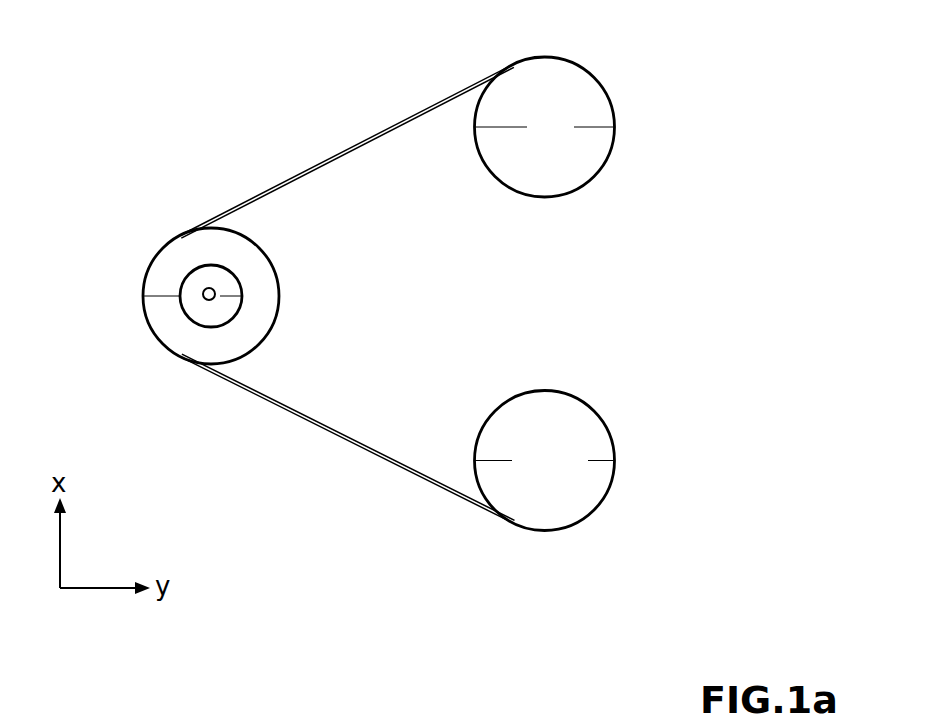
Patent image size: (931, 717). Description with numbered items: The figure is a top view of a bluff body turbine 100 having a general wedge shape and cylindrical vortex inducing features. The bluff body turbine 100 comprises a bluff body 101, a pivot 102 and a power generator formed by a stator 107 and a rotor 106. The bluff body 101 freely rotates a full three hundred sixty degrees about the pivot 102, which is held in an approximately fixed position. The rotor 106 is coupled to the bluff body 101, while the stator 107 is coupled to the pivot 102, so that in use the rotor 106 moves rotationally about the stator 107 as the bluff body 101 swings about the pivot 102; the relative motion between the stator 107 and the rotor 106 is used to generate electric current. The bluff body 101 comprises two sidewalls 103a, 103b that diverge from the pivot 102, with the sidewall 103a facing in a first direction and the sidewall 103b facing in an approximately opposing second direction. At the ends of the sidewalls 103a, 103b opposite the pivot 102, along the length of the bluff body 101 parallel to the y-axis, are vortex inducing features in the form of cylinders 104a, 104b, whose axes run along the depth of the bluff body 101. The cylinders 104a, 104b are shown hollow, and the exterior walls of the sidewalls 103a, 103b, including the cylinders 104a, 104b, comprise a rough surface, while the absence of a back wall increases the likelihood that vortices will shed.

The bluff body turbine 100 is at (158, 84).
The bluff body 101 is at (347, 302).
The pivot 102 is at (203, 295).
The sidewall 103a is at (330, 437).
The sidewall 103b is at (380, 130).
The cylinder 104a is at (605, 496).
The cylinder 104b is at (605, 162).
The rotor 106 is at (160, 247).
The stator 107 is at (178, 289).